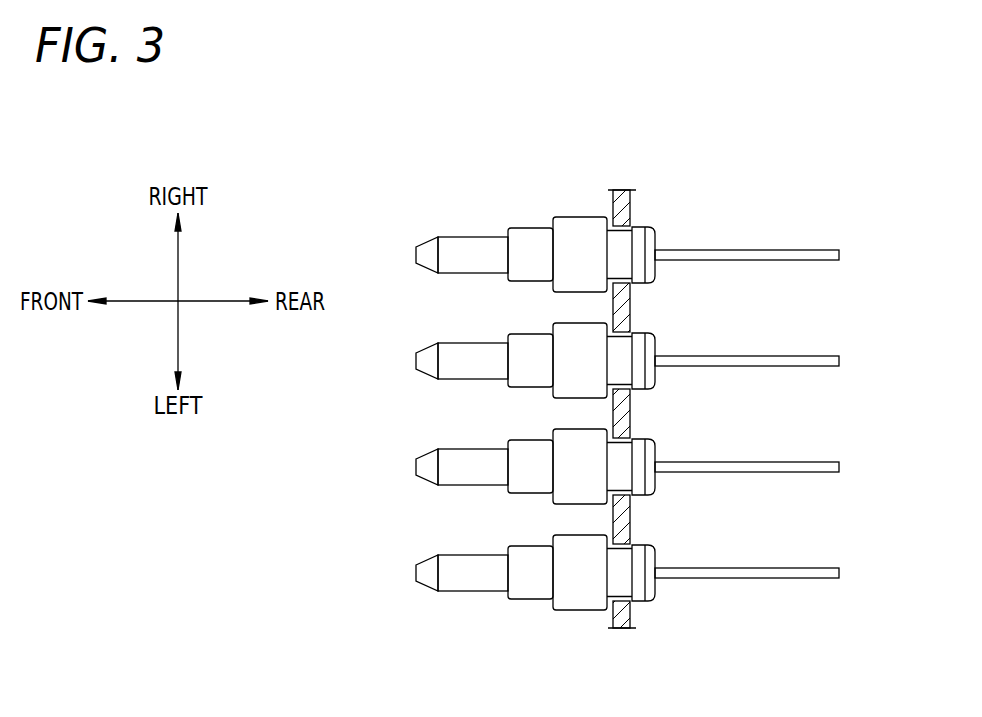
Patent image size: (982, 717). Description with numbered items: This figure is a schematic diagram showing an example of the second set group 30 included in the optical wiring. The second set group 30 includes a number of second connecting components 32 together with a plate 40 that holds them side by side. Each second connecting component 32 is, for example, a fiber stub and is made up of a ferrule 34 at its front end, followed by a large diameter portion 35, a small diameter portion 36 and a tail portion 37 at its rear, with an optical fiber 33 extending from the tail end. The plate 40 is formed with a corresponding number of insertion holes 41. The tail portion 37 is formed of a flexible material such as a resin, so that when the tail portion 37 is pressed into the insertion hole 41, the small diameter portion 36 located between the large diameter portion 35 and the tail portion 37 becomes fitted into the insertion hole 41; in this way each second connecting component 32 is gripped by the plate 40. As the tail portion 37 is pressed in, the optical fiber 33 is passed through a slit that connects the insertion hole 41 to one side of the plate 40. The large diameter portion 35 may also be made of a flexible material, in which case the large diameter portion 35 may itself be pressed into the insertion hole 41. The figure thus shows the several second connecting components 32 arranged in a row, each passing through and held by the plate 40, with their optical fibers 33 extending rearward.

The second set group 30 is at (664, 634).
The second connecting component 32 is at (482, 216).
The optical fiber 33 is at (800, 250).
The ferrule 34 is at (437, 238).
The large diameter portion 35 is at (575, 215).
The small diameter portion 36 is at (626, 220).
The tail portion 37 is at (642, 226).
The plate 40 is at (632, 308).
The insertion hole 41 is at (634, 498).